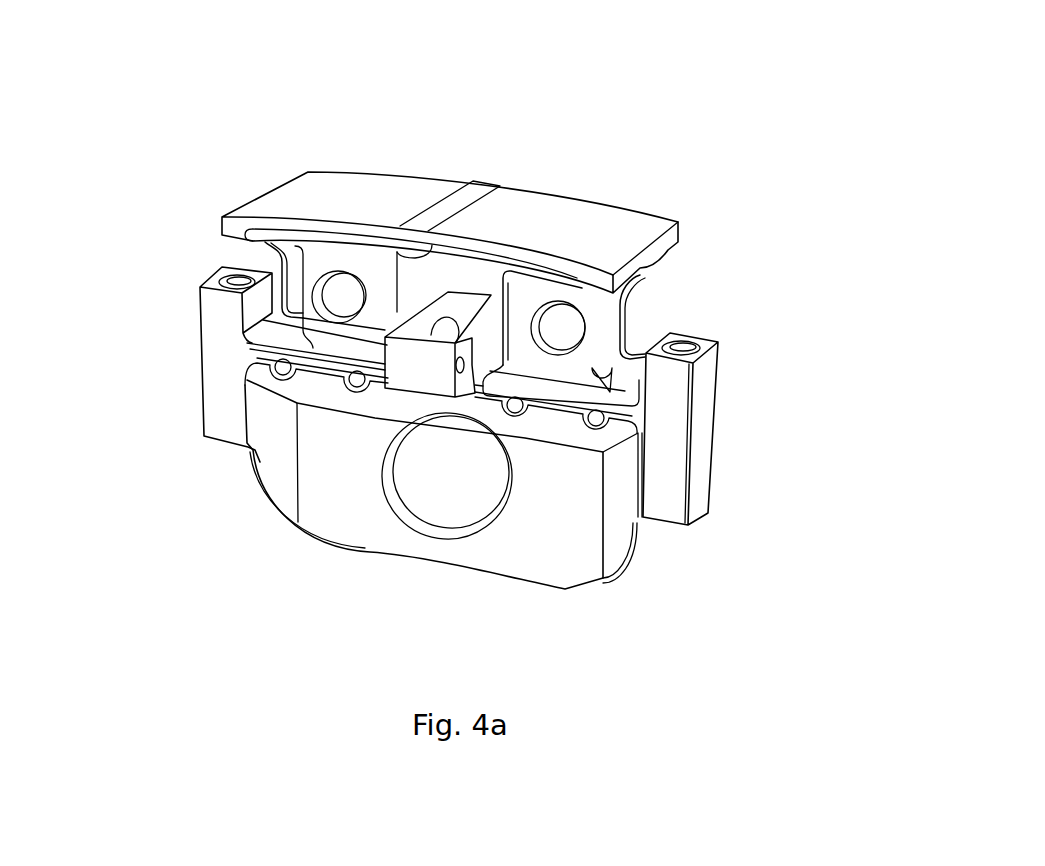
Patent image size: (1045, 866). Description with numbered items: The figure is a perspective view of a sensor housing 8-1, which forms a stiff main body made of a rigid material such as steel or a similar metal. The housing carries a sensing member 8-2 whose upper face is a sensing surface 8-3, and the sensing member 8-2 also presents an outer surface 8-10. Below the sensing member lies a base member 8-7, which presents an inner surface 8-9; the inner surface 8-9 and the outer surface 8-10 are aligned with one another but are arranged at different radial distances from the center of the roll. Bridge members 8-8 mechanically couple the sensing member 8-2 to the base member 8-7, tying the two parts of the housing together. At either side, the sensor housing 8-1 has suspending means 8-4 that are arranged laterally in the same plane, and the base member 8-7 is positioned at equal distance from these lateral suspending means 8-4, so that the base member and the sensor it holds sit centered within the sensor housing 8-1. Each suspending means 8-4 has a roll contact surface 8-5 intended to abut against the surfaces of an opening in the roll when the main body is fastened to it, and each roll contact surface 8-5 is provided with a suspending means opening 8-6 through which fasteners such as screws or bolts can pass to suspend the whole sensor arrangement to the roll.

The sensor housing 8-1 is at (791, 133).
The sensing member 8-2 is at (403, 260).
The sensing surface 8-3 is at (550, 213).
The suspending means 8-4 is at (222, 383).
The roll contact surface 8-5 is at (718, 348).
The suspending means opening 8-6 is at (676, 346).
The base member 8-7 is at (420, 362).
The bridge member 8-8 is at (300, 273).
The inner surface 8-9 is at (452, 347).
The outer surface 8-10 is at (402, 242).